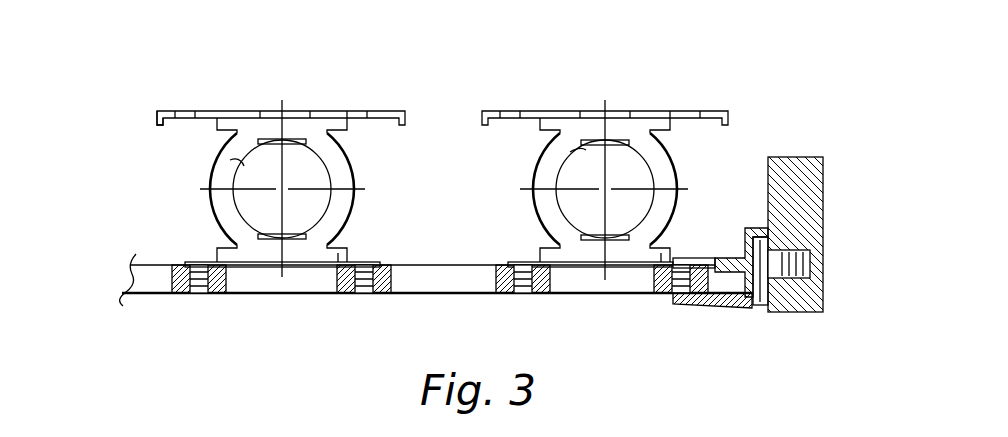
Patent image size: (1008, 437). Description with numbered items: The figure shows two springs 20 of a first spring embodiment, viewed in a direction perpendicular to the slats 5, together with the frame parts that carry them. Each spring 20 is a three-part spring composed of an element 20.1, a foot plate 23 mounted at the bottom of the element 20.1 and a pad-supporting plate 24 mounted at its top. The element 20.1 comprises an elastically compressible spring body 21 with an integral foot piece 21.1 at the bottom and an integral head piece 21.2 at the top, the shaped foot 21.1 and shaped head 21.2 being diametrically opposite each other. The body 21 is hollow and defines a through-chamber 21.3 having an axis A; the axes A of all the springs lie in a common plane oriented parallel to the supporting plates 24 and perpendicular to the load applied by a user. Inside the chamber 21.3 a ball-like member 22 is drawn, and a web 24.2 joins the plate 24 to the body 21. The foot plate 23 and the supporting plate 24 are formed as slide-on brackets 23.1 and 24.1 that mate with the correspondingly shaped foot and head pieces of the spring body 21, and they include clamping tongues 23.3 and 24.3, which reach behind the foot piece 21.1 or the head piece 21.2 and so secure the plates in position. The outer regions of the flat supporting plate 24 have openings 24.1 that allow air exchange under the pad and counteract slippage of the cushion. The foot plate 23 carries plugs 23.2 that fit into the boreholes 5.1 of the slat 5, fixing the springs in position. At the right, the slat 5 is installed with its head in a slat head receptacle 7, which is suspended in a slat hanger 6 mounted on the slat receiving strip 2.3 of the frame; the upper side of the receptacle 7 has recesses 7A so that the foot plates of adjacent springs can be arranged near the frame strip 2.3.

The slat receiving strip 2.3 is at (797, 157).
The slat 5 is at (437, 295).
The borehole 5.1 is at (200, 295).
The slat hanger 6 is at (755, 308).
The slat head receptacle 7 is at (730, 257).
The recess 7A is at (697, 258).
The spring 20 is at (233, 108).
The element 20.1 is at (434, 189).
The spring body 21 is at (679, 178).
The foot piece 21.1 is at (216, 256).
The head piece 21.2 is at (583, 122).
The through-chamber 21.3 is at (243, 173).
The ball 22 is at (211, 193).
The foot plate 23 is at (222, 238).
The slide-on bracket 23.1 is at (348, 250).
The plug 23.2 is at (540, 295).
The clamping tongue 23.3 is at (305, 231).
The supporting plate 24 is at (292, 111).
The slide-on bracket 24.1 is at (183, 112).
The web of flange plate 24.2 is at (215, 126).
The clamping tongue 24.3 is at (580, 148).
The axis A is at (608, 185).